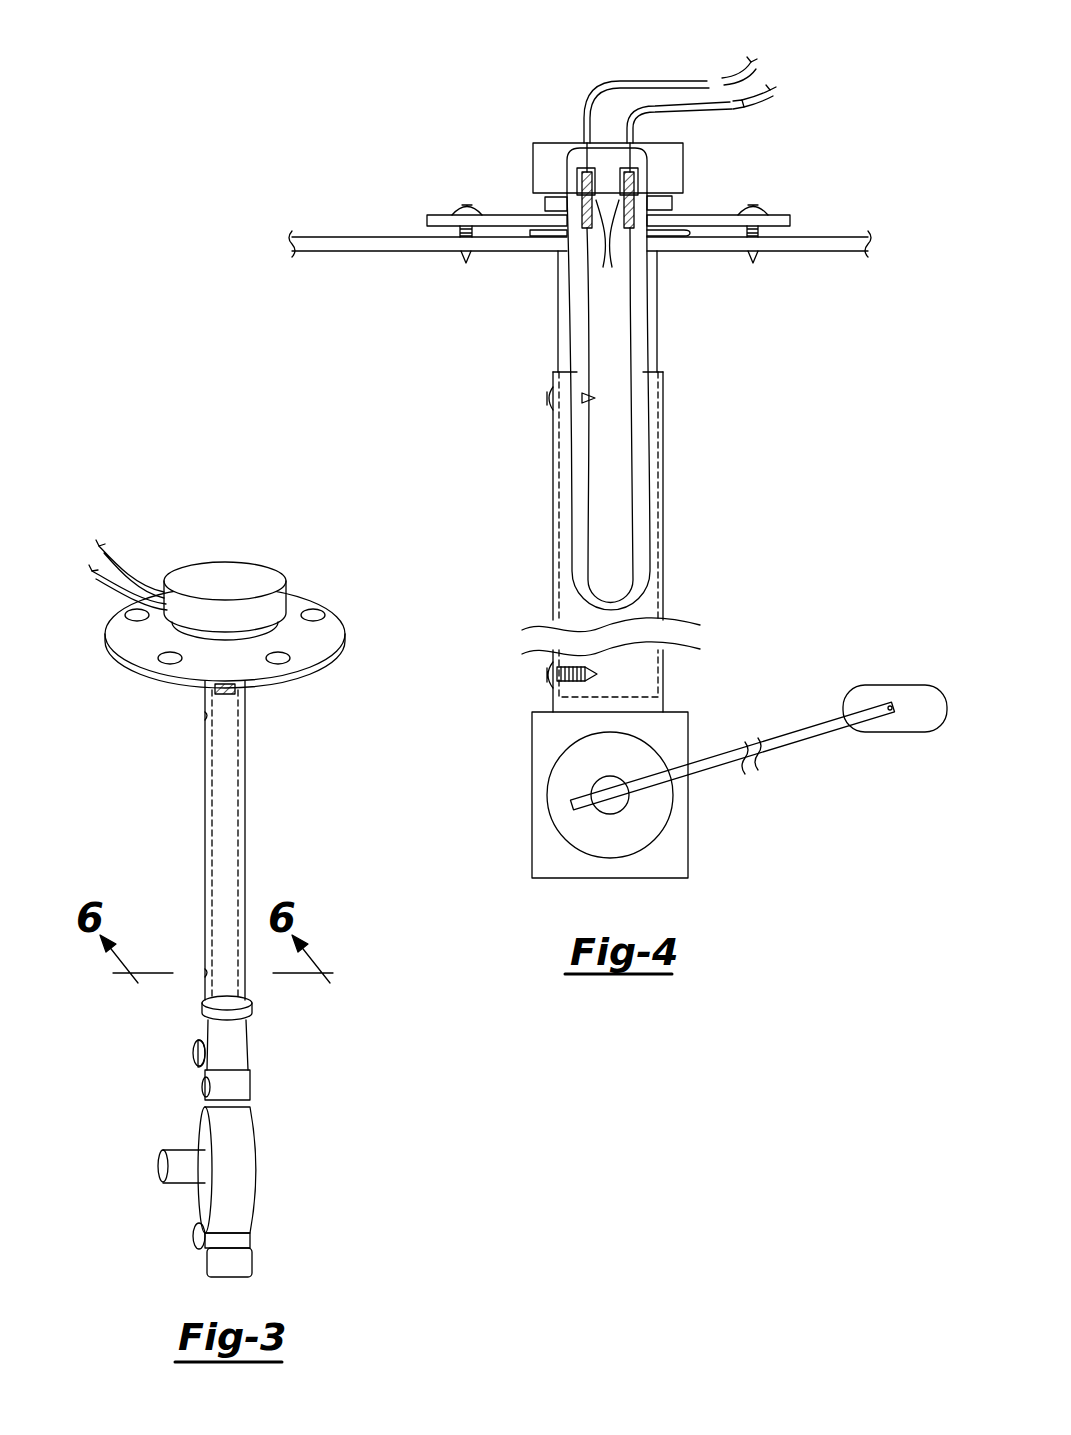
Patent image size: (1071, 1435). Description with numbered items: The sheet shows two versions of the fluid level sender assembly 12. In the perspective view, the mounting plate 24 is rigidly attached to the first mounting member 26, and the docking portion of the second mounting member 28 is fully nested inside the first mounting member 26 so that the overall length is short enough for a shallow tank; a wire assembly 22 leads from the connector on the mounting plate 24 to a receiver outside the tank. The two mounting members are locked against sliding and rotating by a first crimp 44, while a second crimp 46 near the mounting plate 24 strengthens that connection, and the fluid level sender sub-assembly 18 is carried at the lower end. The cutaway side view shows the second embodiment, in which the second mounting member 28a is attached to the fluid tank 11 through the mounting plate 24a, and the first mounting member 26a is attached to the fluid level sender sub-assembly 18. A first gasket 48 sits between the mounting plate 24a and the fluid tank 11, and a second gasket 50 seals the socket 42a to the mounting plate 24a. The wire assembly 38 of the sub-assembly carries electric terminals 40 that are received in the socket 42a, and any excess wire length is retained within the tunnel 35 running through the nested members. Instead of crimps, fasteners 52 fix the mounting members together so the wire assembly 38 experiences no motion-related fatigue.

In FIG. 4, the fluid tank 11 is at (329, 237).
In FIG. 4, the wire assembly 22 is at (721, 78).
In FIG. 4, the mounting plate 24a is at (427, 220).
In FIG. 4, the first mounting member 26a is at (663, 460).
In FIG. 4, the second mounting member 28a is at (558, 313).
In FIG. 4, the tunnel 35 is at (607, 407).
In FIG. 4, the wire assembly 38 is at (590, 332).
In FIG. 4, the electric terminals 40 is at (607, 218).
In FIG. 4, the socket 42a is at (533, 153).
In FIG. 4, the first gasket 48 is at (690, 233).
In FIG. 4, the second gasket 50 is at (672, 201).
In FIG. 4, the fasteners 52 is at (548, 392).
In FIG. 3, the fluid level sender assembly 12 is at (285, 798).
In FIG. 3, the fluid level sender sub-assembly 18 is at (257, 1170).
In FIG. 3, the mounting plate 24 is at (313, 605).
In FIG. 3, the first mounting member 26 is at (205, 782).
In FIG. 3, the second mounting member 28 is at (232, 843).
In FIG. 3, the first crimp 44 is at (205, 973).
In FIG. 3, the second crimp 46 is at (206, 716).